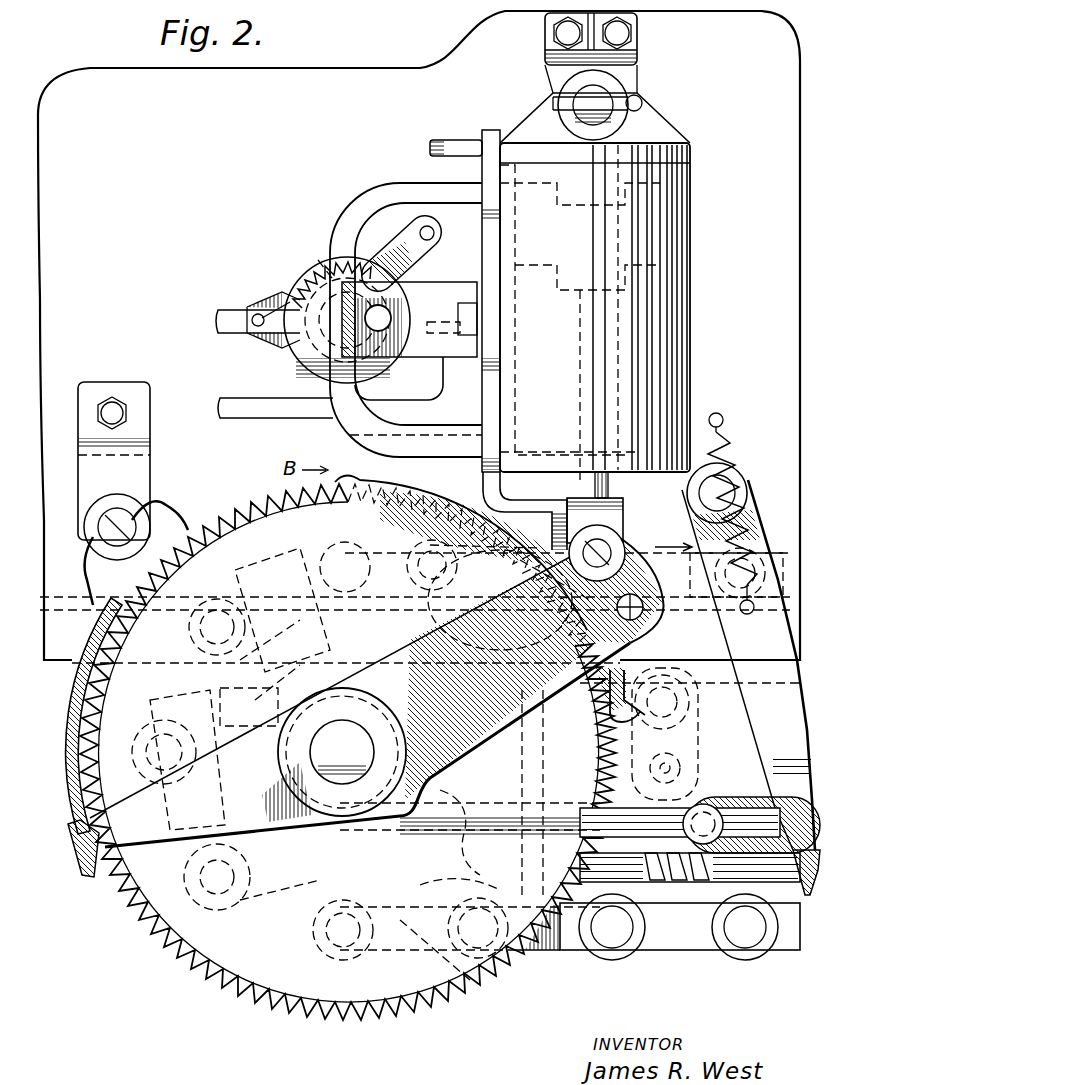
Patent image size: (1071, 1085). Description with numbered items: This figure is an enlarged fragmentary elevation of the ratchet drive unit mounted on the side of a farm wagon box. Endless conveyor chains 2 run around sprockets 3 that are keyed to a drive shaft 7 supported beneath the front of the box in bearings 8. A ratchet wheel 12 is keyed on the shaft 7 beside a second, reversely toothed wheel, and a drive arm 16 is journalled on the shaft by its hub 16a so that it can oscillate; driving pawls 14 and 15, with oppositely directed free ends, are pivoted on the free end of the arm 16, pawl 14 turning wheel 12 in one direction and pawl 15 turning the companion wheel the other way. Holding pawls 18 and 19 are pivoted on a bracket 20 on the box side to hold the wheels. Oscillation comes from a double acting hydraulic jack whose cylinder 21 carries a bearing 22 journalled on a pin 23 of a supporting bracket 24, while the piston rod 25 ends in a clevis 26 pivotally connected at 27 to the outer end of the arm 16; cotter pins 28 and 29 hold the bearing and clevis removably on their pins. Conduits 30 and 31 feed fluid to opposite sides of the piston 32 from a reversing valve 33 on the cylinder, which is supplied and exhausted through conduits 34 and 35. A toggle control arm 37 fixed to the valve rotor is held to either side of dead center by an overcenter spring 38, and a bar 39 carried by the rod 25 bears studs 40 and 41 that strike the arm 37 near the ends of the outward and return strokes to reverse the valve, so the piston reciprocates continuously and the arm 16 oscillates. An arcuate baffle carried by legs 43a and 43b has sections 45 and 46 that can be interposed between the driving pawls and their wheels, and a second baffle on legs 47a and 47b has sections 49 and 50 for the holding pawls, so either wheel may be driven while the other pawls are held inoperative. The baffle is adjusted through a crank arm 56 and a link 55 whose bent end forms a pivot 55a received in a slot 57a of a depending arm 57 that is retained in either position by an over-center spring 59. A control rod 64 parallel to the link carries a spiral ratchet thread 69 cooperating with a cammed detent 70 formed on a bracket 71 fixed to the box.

The chains 2 is at (690, 942).
The sprockets 3 is at (270, 940).
The drive shaft 7 is at (345, 728).
The bearings 8 is at (249, 707).
The ratchet wheel 12 is at (248, 1000).
The driving pawl 14 is at (650, 645).
The driving pawl 15 is at (535, 578).
The drive arm 16 is at (405, 645).
The hub 16a is at (280, 745).
The holding pawl 18 is at (172, 508).
The holding pawl 19 is at (86, 578).
The bracket 20 is at (140, 470).
The cylinder 21 is at (690, 305).
The bearing 22 is at (655, 140).
The pin 23 is at (606, 100).
The supporting bracket 24 is at (640, 40).
The piston rod 25 is at (578, 390).
The clevis 26 is at (618, 508).
The pivot pin 27 is at (612, 548).
The cotter pin 28 is at (644, 102).
The cotter pin 29 is at (672, 536).
The fluid conduit 30 is at (378, 195).
The fluid conduit 31 is at (455, 445).
The piston 32 is at (580, 317).
The reversing valve 33 is at (305, 290).
The supply conduit 34 is at (220, 322).
The exhaust conduit 35 is at (250, 388).
The toggle control arm 37 is at (437, 238).
The overcenter spring 38 is at (343, 283).
The bar 39 is at (483, 250).
The stud 40 is at (446, 145).
The stud 41 is at (444, 320).
The leg 43a is at (272, 660).
The leg 43b is at (305, 655).
The baffle section 45 is at (345, 478).
The baffle section 46 is at (415, 478).
The leg 47a is at (115, 810).
The leg 47b is at (145, 640).
The baffle section 49 is at (80, 860).
The baffle section 50 is at (66, 715).
The link 55 is at (750, 782).
The pivot 55a is at (705, 805).
The crank arm 56 is at (360, 845).
The depending arm 57 is at (757, 707).
The slot 57a is at (787, 765).
The over-center tension spring 59 is at (725, 443).
The control rod 64 is at (726, 882).
The spiral ratchet thread 69 is at (672, 882).
The detent 70 is at (510, 893).
The bracket 71 is at (544, 770).